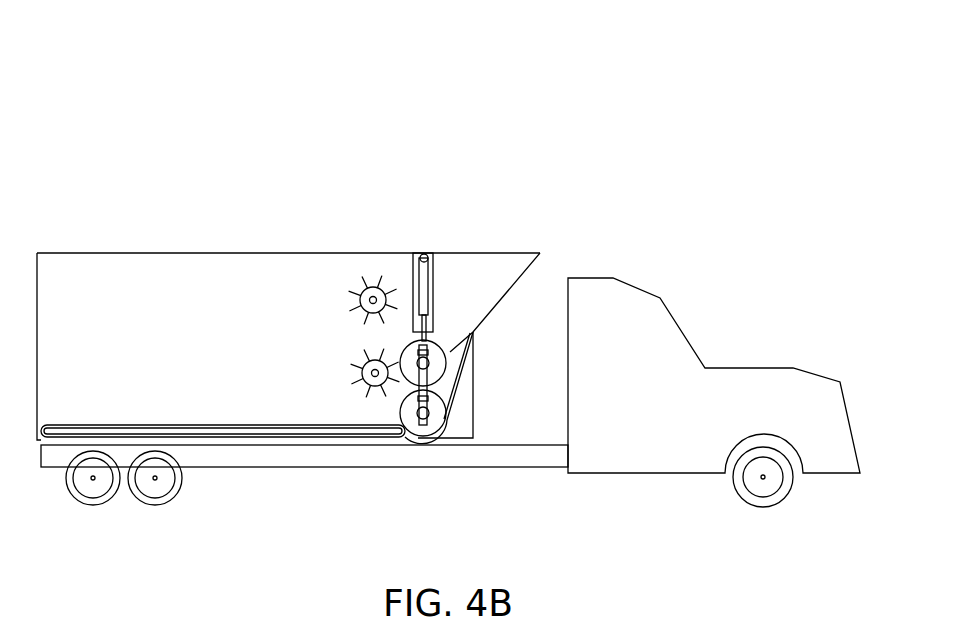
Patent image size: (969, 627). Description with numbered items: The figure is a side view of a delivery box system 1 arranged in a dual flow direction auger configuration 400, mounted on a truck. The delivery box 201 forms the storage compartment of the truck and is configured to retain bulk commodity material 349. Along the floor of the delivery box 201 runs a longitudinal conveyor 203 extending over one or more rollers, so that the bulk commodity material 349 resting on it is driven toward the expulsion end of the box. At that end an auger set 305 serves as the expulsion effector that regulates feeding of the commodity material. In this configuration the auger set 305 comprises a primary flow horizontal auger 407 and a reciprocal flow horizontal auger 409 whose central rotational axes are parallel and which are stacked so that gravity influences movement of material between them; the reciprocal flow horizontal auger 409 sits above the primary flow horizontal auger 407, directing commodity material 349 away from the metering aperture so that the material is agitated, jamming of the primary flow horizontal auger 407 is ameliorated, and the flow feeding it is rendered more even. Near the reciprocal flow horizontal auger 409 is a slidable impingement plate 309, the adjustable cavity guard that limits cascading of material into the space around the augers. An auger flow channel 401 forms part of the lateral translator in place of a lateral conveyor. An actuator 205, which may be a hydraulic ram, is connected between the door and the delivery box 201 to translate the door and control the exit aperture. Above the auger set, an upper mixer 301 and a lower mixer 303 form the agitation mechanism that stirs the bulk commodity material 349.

The delivery box system 1 is at (558, 61).
The dual flow direction auger configuration 400 is at (556, 131).
The delivery box 201 is at (510, 253).
The bulk commodity material 349 is at (121, 273).
The slidable impingement plate 309 is at (475, 336).
The upper mixer 301 is at (374, 287).
The lower mixer 303 is at (373, 386).
The actuator 205 is at (437, 262).
The auger set 305 is at (550, 360).
The reciprocal flow horizontal auger 409 is at (430, 363).
The primary flow horizontal auger 407 is at (430, 413).
The auger flow channel 401 is at (428, 440).
The longitudinal conveyor 203 is at (245, 438).